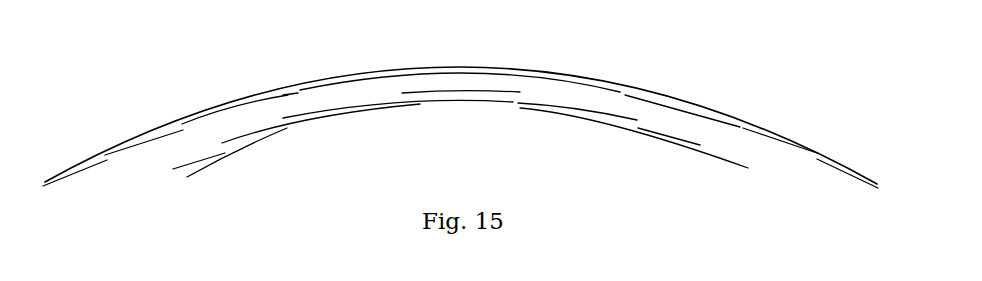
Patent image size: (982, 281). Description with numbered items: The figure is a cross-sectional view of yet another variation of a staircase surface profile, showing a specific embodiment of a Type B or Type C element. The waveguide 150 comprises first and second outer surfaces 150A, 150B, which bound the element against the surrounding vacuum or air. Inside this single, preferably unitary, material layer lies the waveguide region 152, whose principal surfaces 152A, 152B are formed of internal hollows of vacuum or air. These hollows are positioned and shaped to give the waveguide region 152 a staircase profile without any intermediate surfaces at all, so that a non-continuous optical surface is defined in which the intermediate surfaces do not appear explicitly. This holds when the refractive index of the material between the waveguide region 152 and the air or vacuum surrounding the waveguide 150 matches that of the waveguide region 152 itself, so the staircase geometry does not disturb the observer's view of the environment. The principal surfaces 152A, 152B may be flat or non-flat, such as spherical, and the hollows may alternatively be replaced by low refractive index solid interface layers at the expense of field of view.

The waveguide 150 is at (200, 78).
The first outer surface 150A is at (502, 70).
The second outer surface 150B is at (577, 117).
The waveguide region 152 is at (715, 138).
The first principal surface 152A is at (293, 97).
The second principal surface 152B is at (307, 115).